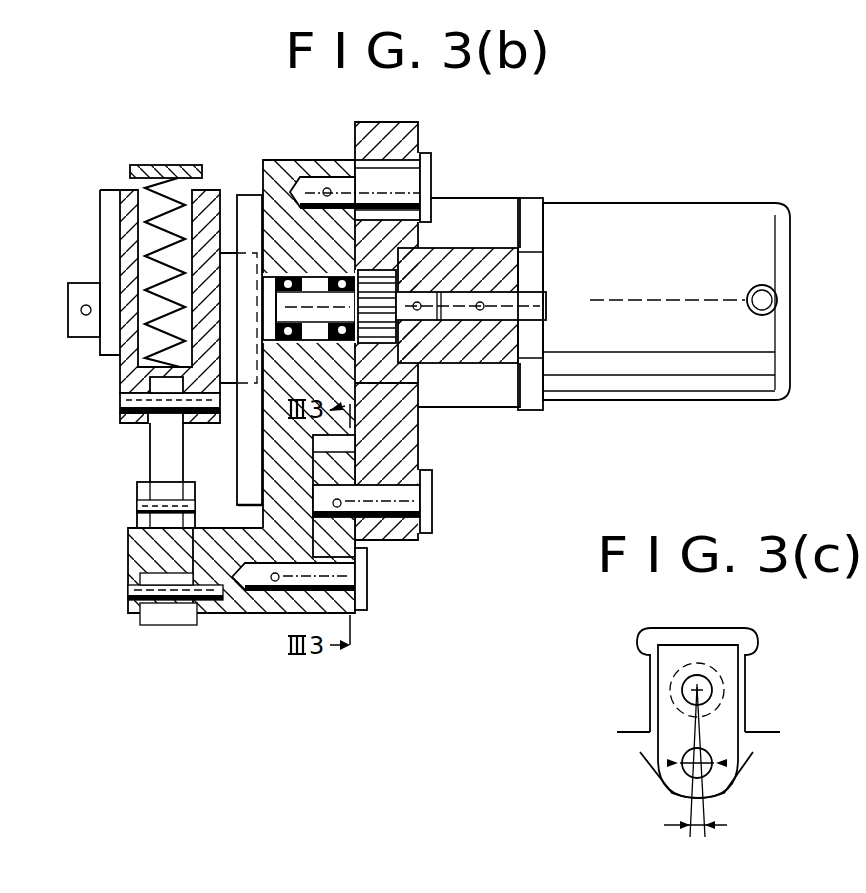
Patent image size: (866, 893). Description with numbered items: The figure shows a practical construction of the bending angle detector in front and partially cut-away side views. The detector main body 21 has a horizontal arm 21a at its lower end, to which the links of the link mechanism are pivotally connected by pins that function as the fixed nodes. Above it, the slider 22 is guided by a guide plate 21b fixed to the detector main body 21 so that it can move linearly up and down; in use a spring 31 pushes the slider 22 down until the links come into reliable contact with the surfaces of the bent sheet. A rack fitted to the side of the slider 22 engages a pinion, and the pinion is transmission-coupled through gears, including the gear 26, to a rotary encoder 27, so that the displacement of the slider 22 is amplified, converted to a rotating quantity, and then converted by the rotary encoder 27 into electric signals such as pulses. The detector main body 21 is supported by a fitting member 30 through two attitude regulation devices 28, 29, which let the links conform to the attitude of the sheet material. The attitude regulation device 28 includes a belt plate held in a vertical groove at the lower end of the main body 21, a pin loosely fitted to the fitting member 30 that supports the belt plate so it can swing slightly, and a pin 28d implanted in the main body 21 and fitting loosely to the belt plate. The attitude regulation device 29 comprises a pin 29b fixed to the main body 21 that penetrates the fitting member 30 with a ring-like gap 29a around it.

The detector main body 21 is at (281, 163).
The horizontal arm 21a is at (243, 604).
The guide plate 21b is at (248, 428).
The slider 22 is at (122, 381).
The gear 26 is at (372, 344).
The rotary encoder 27 is at (690, 383).
The attitude regulation device 28 is at (363, 513).
The pin 28d is at (367, 583).
The attitude regulation device 29 is at (392, 198).
The ring-like gap 29a is at (404, 163).
The pin 29b is at (428, 207).
The fitting member 30 is at (393, 437).
The spring 31 is at (145, 190).